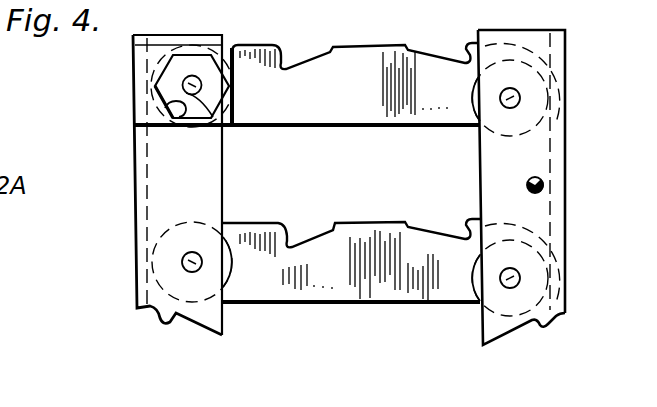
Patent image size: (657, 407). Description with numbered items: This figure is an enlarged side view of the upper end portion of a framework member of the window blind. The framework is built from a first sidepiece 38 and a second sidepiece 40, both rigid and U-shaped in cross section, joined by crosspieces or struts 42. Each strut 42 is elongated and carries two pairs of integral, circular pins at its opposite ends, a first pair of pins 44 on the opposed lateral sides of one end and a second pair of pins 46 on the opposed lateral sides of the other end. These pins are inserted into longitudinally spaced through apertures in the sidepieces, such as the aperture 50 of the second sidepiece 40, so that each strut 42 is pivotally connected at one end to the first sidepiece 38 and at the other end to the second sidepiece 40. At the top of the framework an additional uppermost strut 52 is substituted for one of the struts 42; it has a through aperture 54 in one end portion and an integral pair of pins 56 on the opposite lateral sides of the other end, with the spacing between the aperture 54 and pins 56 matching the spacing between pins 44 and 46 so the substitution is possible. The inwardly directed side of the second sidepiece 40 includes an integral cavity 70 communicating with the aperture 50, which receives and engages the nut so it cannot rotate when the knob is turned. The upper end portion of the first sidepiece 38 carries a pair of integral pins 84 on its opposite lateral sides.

The first sidepiece 38 is at (537, 150).
The second sidepiece 40 is at (160, 180).
The strut 42 is at (412, 267).
The first pair of pins 44 is at (508, 282).
The second pair of pins 46 is at (197, 268).
The through aperture 50 is at (183, 80).
The uppermost strut 52 is at (352, 68).
The through aperture 54 is at (226, 130).
The pair of pins 56 is at (508, 100).
The cavity 70 is at (168, 106).
The pair of integral pins 84 is at (542, 181).